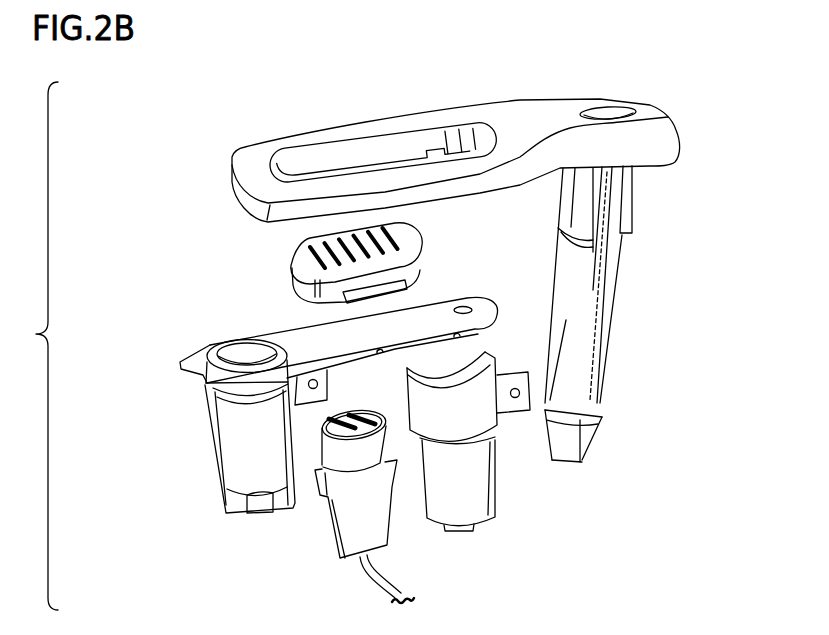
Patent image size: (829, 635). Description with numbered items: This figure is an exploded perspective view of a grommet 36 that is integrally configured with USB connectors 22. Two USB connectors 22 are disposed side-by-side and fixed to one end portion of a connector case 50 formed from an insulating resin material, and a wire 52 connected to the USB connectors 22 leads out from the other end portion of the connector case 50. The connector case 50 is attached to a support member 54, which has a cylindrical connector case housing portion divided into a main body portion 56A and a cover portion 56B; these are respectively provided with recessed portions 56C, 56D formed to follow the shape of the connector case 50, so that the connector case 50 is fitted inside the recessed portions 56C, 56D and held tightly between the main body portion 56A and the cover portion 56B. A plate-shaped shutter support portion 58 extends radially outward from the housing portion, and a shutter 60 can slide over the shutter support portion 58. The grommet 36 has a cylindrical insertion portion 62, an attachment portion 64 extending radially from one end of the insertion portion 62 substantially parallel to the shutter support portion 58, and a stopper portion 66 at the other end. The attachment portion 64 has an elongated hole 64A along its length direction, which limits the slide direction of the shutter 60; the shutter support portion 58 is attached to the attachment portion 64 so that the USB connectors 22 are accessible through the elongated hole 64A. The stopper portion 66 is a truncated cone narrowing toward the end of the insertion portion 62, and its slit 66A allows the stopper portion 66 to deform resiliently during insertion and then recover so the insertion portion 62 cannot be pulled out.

The USB connector 22 is at (347, 417).
The grommet 36 is at (657, 108).
The connector case 50 is at (331, 526).
The wire 52 is at (376, 584).
The support member 54 is at (196, 394).
The main body portion 56A is at (218, 441).
The cover portion 56B is at (495, 490).
The recessed portion 56C is at (252, 463).
The recessed portion 56D is at (455, 367).
The shutter support portion 58 is at (450, 300).
The shutter 60 is at (426, 233).
The insertion portion 62 is at (613, 305).
The attachment portion 64 is at (440, 109).
The elongated hole 64A is at (360, 135).
The stopper portion 66 is at (603, 412).
The slit 66A is at (545, 437).